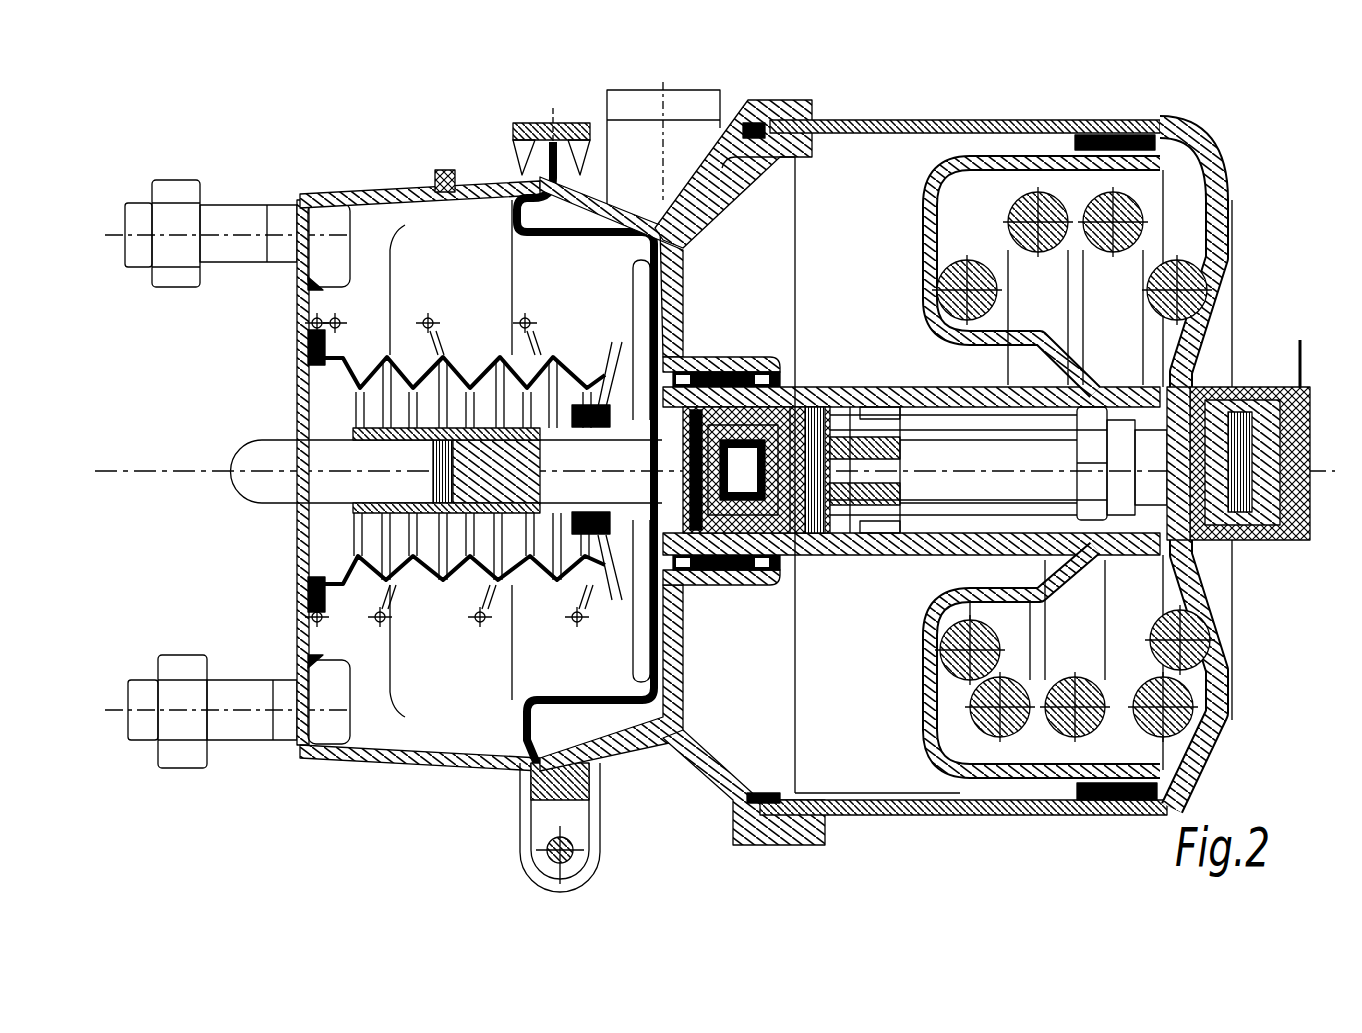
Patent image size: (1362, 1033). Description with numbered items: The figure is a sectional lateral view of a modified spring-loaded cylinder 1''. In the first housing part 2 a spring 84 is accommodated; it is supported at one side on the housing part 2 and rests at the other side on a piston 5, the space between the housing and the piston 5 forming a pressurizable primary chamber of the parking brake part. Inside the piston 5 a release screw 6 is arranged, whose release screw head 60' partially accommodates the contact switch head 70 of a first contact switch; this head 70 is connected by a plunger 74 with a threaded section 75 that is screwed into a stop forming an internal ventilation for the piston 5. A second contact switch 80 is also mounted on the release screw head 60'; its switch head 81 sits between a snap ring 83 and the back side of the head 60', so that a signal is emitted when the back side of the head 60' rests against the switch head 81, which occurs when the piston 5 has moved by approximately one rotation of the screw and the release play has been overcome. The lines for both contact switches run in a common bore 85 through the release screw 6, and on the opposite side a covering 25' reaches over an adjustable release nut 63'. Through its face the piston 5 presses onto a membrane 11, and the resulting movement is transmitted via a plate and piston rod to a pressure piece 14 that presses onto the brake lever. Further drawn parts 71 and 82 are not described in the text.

The spring-loaded cylinder 1'' is at (1256, 118).
The first housing part 2 is at (1017, 120).
The piston 5 is at (1020, 160).
The release screw 6 is at (1000, 720).
The membrane 11 is at (495, 170).
The pressure piece 14 is at (255, 500).
The covering 25' is at (1251, 519).
The release screw head 60' is at (943, 558).
The adjustable release nut 63' is at (1225, 512).
The contact switch head 70 is at (797, 593).
The piston head 71 is at (820, 556).
The plunger 74 is at (797, 548).
The threaded section 75 is at (752, 372).
The second contact switch 80 is at (880, 387).
The switch head 81 is at (870, 387).
The sealing ring 82 is at (890, 556).
The snap ring 83 is at (822, 387).
The spring 84 is at (850, 387).
The common bore 85 is at (940, 556).